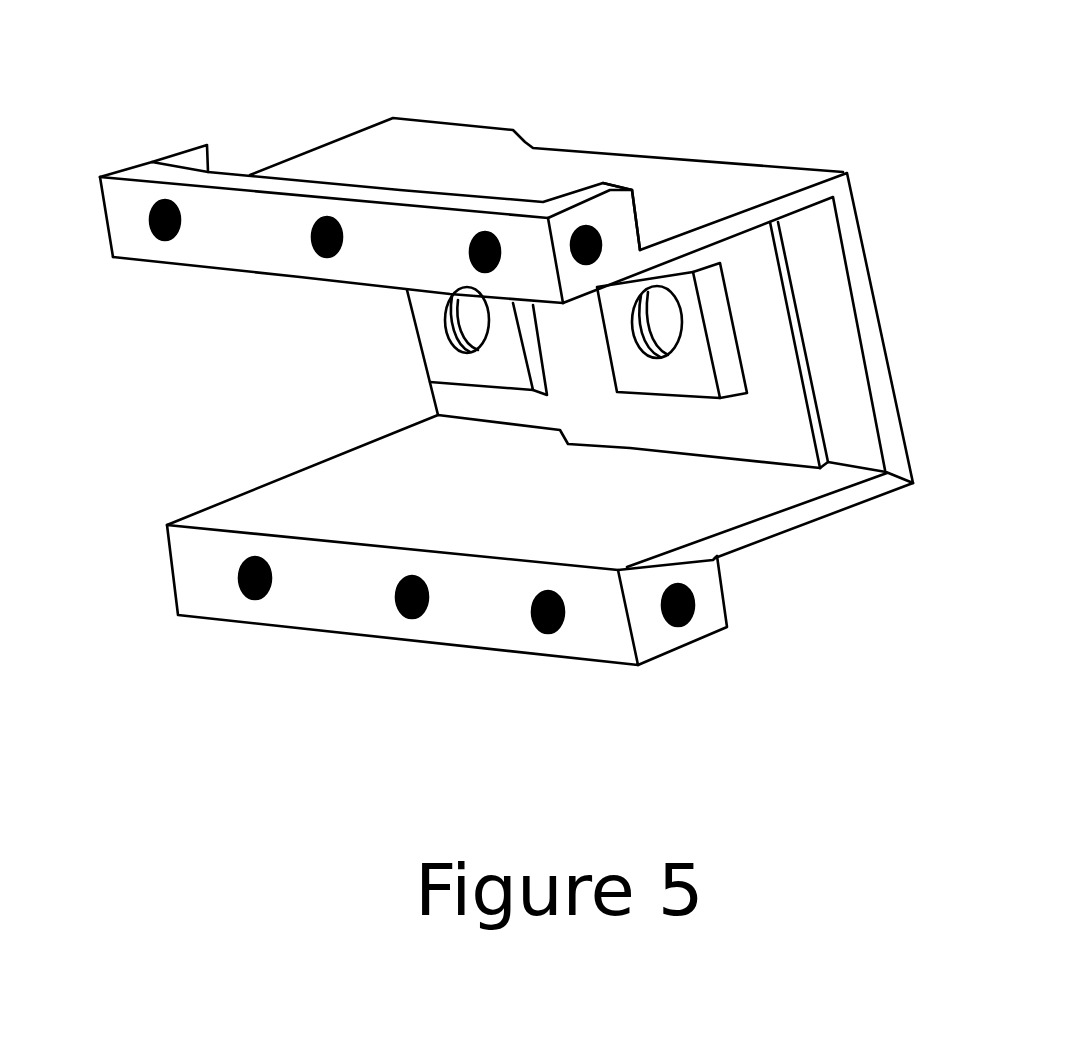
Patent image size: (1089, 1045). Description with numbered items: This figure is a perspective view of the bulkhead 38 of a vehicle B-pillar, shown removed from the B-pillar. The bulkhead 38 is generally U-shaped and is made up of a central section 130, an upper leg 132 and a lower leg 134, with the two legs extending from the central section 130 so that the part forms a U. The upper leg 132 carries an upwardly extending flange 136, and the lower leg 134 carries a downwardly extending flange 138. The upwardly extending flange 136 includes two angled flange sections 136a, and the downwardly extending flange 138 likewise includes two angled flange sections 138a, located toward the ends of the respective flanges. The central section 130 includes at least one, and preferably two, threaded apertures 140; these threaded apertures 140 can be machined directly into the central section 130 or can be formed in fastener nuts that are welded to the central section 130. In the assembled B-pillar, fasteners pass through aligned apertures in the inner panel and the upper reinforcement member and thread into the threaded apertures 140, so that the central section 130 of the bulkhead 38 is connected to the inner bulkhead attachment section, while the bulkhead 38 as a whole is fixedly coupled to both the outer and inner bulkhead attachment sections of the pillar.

The bulkhead 38 is at (897, 230).
The central section 130 is at (833, 372).
The upper leg 132 is at (700, 205).
The lower leg 134 is at (727, 510).
The upwardly extending flange 136 is at (247, 250).
The angled flange sections 136a is at (178, 150).
The downwardly extending flange 138 is at (320, 598).
The angled flange sections 138a is at (717, 625).
The threaded apertures 140 is at (482, 298).